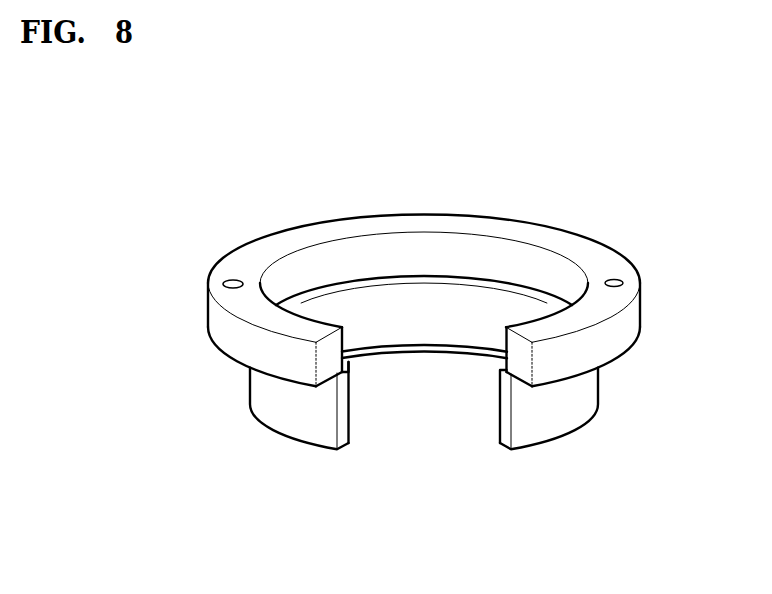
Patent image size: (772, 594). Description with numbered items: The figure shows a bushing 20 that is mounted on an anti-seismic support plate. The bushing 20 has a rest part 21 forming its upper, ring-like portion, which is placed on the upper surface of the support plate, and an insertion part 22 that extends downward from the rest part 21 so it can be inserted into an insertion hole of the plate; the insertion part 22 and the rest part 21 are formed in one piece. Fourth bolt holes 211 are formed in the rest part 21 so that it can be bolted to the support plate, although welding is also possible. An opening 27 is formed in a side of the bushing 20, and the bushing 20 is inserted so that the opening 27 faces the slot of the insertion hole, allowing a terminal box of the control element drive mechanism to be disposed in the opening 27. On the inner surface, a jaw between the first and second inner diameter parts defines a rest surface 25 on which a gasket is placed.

The bushing 20 is at (495, 205).
The rest part 21 is at (323, 358).
The insertion part 22 is at (344, 412).
The rest surface 25 is at (350, 368).
The opening 27 is at (477, 452).
The fourth bolt holes 211 is at (233, 281).